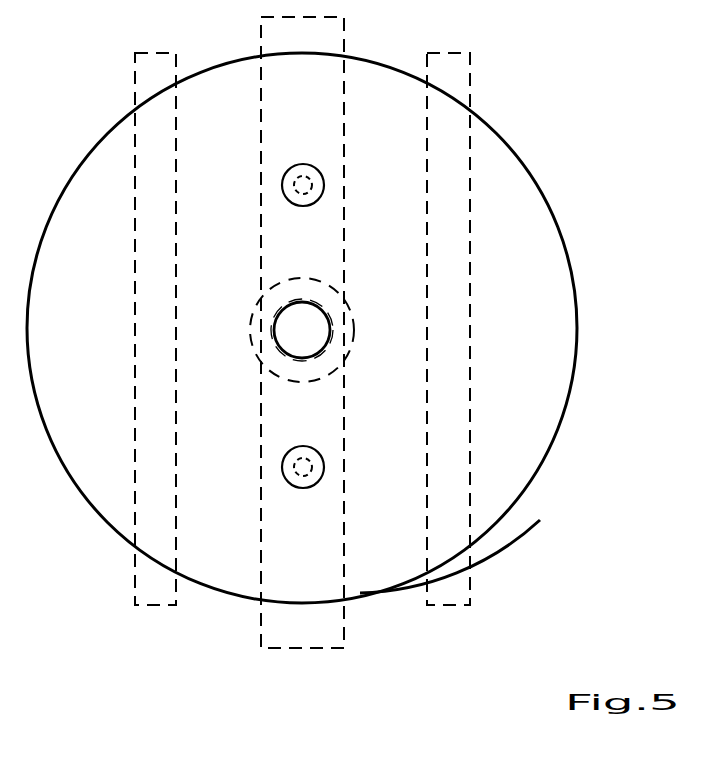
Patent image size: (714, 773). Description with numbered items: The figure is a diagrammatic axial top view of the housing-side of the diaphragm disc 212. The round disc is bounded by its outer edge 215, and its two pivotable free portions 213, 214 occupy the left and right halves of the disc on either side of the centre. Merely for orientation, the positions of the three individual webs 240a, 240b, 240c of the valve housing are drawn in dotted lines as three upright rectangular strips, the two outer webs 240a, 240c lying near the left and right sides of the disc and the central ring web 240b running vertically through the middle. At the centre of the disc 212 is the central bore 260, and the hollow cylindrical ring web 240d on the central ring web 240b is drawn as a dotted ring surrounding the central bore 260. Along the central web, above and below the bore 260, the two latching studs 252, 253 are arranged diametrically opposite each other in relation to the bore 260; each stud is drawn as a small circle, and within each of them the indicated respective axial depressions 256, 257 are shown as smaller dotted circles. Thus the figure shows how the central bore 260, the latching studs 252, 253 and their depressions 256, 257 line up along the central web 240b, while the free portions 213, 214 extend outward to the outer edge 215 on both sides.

The diaphragm disc 212 is at (535, 178).
The pivotable free portion 213 is at (113, 339).
The pivotable free portion 214 is at (537, 340).
The outer edge 215 is at (518, 503).
The web 240a is at (135, 597).
The central ring web 240b is at (302, 648).
The web 240c is at (470, 596).
The hollow cylindrical ring web 240d is at (316, 282).
The latching stud 252 is at (323, 175).
The latching stud 253 is at (282, 462).
The axial depression 256 is at (296, 185).
The axial depression 257 is at (311, 468).
The central bore 260 is at (310, 357).